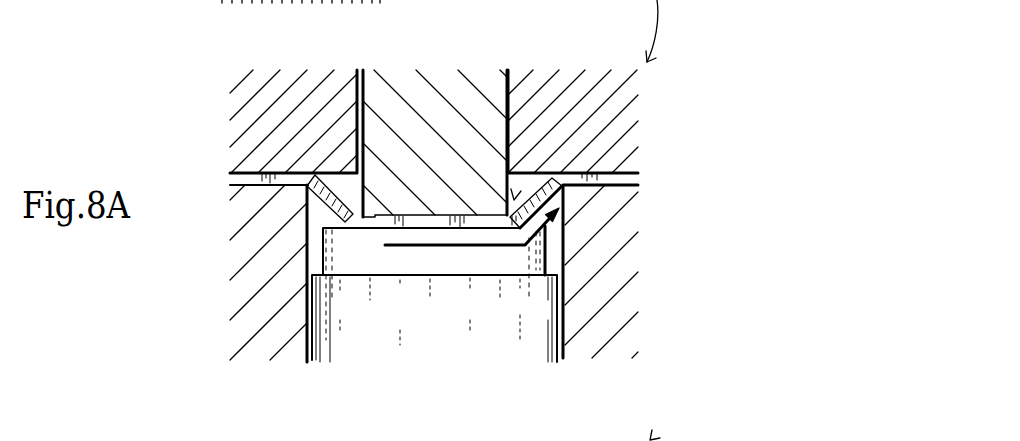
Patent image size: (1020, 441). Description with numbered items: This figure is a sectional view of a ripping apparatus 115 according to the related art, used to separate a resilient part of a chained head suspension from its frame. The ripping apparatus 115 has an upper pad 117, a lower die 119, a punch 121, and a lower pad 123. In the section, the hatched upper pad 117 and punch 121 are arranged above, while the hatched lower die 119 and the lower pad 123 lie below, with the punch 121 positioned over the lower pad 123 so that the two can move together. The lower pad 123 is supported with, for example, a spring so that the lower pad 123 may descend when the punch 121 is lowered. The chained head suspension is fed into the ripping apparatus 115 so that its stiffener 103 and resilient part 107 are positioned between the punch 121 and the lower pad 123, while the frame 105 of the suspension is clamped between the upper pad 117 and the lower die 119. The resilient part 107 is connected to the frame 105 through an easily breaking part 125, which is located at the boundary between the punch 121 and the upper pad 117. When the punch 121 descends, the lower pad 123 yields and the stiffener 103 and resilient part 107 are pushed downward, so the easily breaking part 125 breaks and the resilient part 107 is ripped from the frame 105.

The stiffener 103 is at (440, 263).
The frame 105 is at (250, 170).
The resilient part 107 is at (453, 218).
The ripping apparatus 115 is at (650, 440).
The upper pad 117 is at (620, 125).
The lower die 119 is at (622, 263).
The punch 121 is at (390, 100).
The lower pad 123 is at (333, 328).
The easily breaking part 125 is at (516, 198).